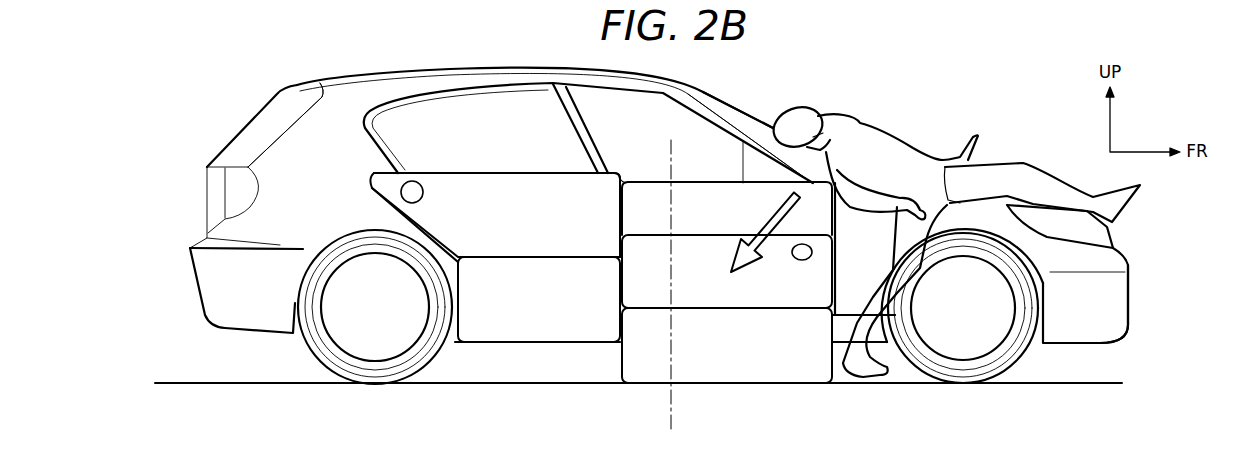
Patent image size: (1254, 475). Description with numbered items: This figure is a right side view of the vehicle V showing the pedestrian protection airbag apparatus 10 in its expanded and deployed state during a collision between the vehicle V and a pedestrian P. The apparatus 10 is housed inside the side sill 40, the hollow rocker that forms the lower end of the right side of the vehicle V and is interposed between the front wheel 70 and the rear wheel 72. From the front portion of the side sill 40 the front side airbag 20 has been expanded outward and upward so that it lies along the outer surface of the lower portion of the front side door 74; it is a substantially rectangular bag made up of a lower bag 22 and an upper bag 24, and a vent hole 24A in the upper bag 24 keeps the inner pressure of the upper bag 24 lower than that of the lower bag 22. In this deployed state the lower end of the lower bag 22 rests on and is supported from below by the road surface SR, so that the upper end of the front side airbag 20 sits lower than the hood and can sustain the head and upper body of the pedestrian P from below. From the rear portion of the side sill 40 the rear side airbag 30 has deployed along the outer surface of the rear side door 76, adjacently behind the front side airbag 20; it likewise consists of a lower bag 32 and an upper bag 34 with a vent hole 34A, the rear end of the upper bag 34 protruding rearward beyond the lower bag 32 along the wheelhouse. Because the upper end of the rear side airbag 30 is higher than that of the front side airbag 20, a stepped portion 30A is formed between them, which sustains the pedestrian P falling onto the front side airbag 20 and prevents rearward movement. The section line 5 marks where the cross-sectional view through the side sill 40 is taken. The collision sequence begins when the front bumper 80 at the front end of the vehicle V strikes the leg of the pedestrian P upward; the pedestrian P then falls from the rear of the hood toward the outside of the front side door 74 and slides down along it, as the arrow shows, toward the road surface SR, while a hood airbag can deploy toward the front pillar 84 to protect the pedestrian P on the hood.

The section line 5 is at (671, 135).
The pedestrian protection airbag apparatus 10 is at (602, 269).
The front side airbag 20 is at (757, 290).
The lower bag 22 is at (778, 362).
The upper bag 24 is at (795, 295).
The vent hole 24A is at (810, 248).
The rear side airbag 30 is at (465, 179).
The stepped portion 30A is at (626, 185).
The lower bag 32 is at (540, 322).
The upper bag 34 is at (380, 185).
The vent hole 34A is at (406, 201).
The side sill 40 is at (845, 332).
The front wheel 70 is at (905, 362).
The rear wheel 72 is at (312, 355).
The front side door 74 is at (722, 120).
The rear side door 76 is at (365, 128).
The front bumper 80 is at (1131, 297).
The front pillar 84 is at (767, 134).
The pedestrian P is at (886, 142).
The vehicle V is at (150, 133).
The road surface SR is at (1097, 381).